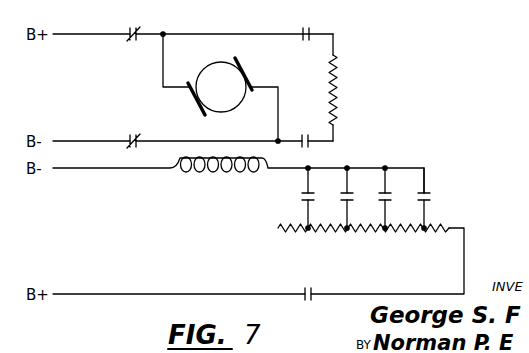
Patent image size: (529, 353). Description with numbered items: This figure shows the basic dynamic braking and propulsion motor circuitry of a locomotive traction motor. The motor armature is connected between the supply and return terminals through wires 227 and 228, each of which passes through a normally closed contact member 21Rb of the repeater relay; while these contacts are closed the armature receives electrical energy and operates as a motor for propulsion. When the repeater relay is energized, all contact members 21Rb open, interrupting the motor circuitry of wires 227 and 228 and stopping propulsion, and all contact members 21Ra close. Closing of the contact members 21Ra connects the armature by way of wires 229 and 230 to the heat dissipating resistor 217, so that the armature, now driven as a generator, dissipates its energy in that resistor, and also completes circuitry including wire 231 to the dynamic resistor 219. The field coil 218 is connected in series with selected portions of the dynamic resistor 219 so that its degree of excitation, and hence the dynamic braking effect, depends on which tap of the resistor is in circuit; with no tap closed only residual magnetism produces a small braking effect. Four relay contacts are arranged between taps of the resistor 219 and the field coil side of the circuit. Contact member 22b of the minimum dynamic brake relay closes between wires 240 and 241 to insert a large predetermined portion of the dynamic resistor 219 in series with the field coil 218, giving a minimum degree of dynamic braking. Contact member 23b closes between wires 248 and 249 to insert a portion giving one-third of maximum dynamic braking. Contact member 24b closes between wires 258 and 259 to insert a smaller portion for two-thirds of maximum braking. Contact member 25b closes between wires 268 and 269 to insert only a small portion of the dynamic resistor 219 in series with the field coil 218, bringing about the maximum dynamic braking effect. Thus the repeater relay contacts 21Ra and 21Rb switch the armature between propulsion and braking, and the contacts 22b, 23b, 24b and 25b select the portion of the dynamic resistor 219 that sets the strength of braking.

The wire 227 is at (150, 53).
The contact member 21Rb is at (130, 32).
The wire 229 is at (250, 34).
The contact member 21Ra is at (302, 33).
The heat dissipating resistor 217 is at (345, 87).
The wire 228 is at (98, 141).
The field coil 218 is at (208, 171).
The wire 240 is at (300, 167).
The wire 230 is at (312, 168).
The wire 249 is at (352, 168).
The wire 258 is at (388, 173).
The contact member 22b is at (303, 197).
The contact member 23b is at (342, 199).
The contact member 24b is at (381, 199).
The contact member 25b is at (426, 197).
The wire 241 is at (303, 205).
The wire 248 is at (330, 214).
The wire 259 is at (369, 214).
The wire 268 is at (426, 177).
The wire 269 is at (426, 214).
The dynamic resistor 219 is at (278, 229).
The wire 231 is at (465, 257).